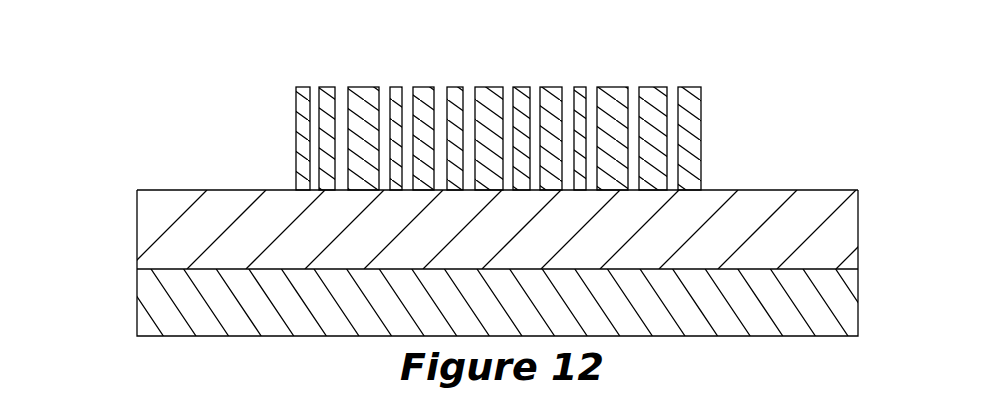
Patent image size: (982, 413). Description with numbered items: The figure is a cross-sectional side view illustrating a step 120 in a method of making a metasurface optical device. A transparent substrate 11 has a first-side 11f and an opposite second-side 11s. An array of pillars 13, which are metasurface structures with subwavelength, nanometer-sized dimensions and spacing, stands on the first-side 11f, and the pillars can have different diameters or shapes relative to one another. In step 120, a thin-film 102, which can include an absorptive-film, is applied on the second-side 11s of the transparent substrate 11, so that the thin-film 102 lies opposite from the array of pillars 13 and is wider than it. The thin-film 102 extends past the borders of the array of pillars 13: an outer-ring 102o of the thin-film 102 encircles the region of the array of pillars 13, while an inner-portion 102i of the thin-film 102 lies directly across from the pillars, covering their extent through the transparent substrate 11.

The step 120 is at (180, 108).
The array of pillars 13 is at (752, 140).
The transparent substrate 11 is at (513, 246).
The first-side 11f is at (746, 195).
The second-side 11s is at (790, 268).
The thin-film 102 is at (150, 317).
The outer-ring 102o is at (245, 318).
The inner-portion 102i is at (528, 315).